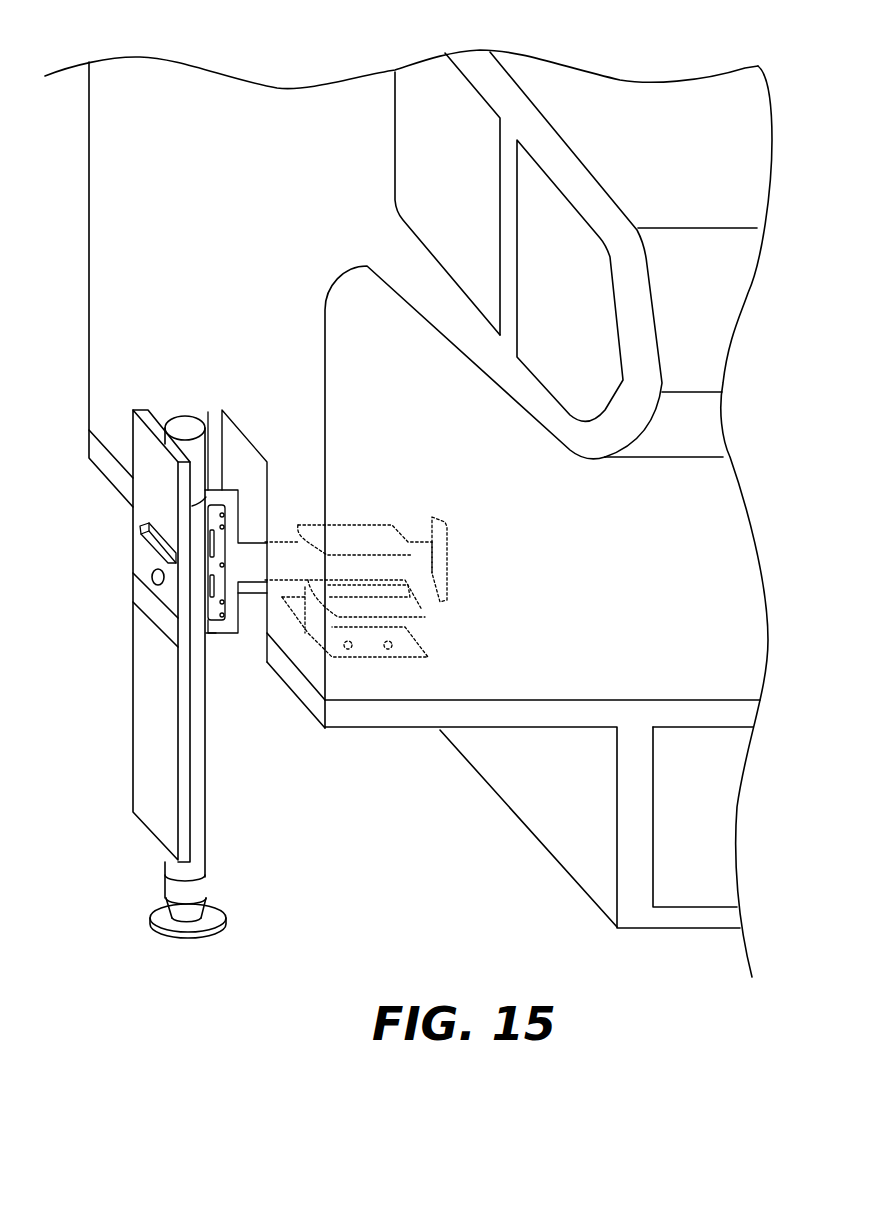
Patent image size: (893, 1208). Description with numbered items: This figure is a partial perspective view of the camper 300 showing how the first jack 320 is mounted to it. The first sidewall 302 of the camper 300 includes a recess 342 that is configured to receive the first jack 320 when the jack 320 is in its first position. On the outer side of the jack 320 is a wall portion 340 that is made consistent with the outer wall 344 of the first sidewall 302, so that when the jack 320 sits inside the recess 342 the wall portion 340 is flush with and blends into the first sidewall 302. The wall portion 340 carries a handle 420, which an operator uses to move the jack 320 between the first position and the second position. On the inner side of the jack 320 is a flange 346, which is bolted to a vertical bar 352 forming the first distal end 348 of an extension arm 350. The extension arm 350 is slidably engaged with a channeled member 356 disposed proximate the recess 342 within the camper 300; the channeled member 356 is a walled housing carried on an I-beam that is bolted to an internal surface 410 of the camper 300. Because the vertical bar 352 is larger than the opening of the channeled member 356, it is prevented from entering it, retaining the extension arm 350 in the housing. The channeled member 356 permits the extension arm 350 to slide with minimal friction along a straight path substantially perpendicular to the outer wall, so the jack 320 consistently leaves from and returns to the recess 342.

The camper 300 is at (323, 100).
The first sidewall 302 is at (118, 278).
The first jack 320 is at (202, 828).
The wall portion 340 is at (147, 673).
The recess 342 is at (208, 442).
The outer wall 344 is at (195, 78).
The flange 346 is at (215, 630).
The first distal end 348 is at (233, 490).
The extension arm 350 is at (255, 553).
The vertical bar 352 is at (233, 523).
The channeled member 356 is at (362, 533).
The internal surface 410 is at (537, 690).
The handle 420 is at (148, 541).